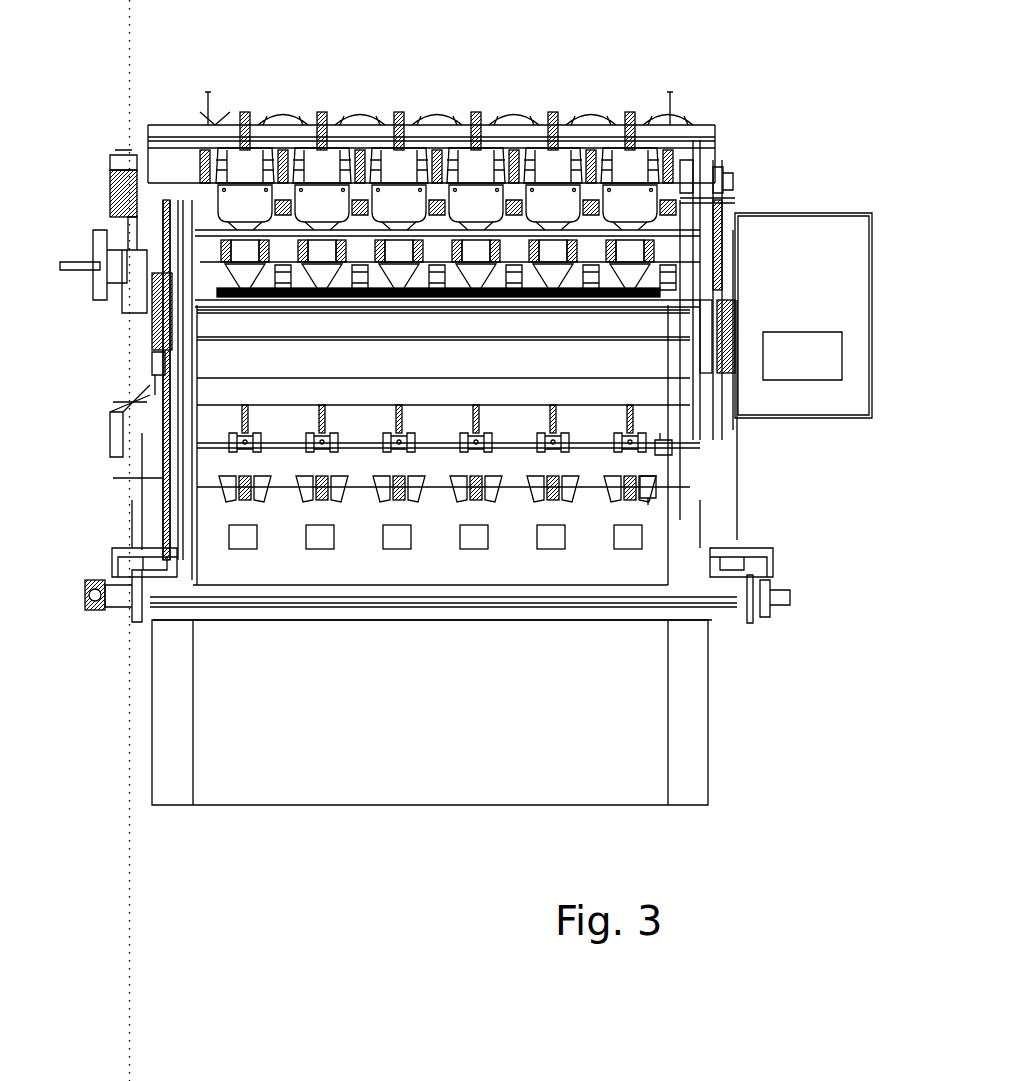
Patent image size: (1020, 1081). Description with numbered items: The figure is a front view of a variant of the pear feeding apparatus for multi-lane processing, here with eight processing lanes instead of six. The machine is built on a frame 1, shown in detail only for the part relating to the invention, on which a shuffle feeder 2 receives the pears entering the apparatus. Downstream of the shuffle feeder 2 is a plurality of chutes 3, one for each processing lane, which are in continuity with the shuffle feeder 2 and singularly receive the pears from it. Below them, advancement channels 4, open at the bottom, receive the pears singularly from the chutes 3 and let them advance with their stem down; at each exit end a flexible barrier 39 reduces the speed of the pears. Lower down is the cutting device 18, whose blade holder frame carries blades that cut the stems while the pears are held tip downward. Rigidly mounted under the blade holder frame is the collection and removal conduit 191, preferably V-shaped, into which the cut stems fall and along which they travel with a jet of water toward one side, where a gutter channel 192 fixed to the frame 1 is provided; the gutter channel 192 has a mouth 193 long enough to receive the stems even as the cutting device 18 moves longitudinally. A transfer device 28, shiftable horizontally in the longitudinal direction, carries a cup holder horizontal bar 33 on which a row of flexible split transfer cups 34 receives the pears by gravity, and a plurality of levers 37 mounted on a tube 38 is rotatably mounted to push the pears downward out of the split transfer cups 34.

The frame 1 is at (720, 704).
The shuffle feeder 2 is at (608, 122).
The chutes 3 is at (680, 160).
The advancement channels 4 is at (725, 193).
The cutting device 18 is at (152, 318).
The transfer device 28 is at (119, 636).
The cup holder horizontal bar 33 is at (648, 488).
The split transfer cups 34 is at (238, 490).
The levers 37 is at (150, 383).
The tube 38 is at (660, 445).
The flexible barrier 39 is at (112, 195).
The collection and removal conduit 191 is at (553, 303).
The gutter channel 192 is at (108, 410).
The mouth 193 is at (150, 352).